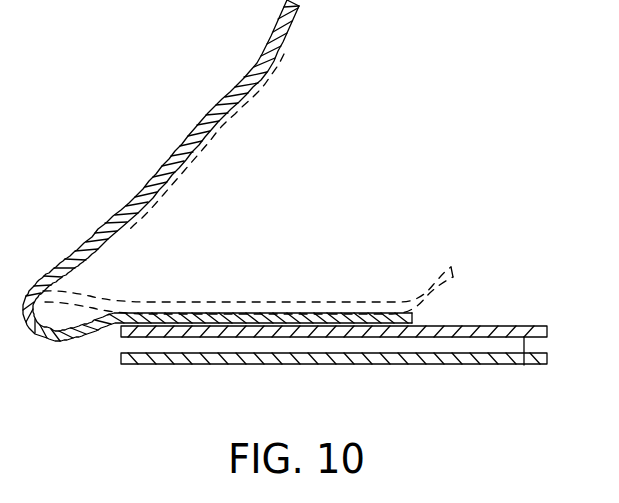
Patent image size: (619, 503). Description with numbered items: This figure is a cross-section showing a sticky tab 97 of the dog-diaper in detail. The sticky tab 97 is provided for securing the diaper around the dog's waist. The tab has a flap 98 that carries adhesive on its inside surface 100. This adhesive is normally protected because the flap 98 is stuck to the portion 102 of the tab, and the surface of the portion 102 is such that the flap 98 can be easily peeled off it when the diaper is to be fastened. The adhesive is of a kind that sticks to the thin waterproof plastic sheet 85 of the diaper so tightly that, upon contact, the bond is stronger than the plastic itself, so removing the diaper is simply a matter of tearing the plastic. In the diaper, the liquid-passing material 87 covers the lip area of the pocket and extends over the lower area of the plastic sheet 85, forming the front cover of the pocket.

The flap 98 is at (253, 65).
The sticky tab 97 is at (54, 342).
The inside surface 100 is at (184, 165).
The portion of the tab 102 is at (360, 312).
The thin waterproof plastic sheet 85 is at (302, 366).
The liquid-passing material 87 is at (524, 366).